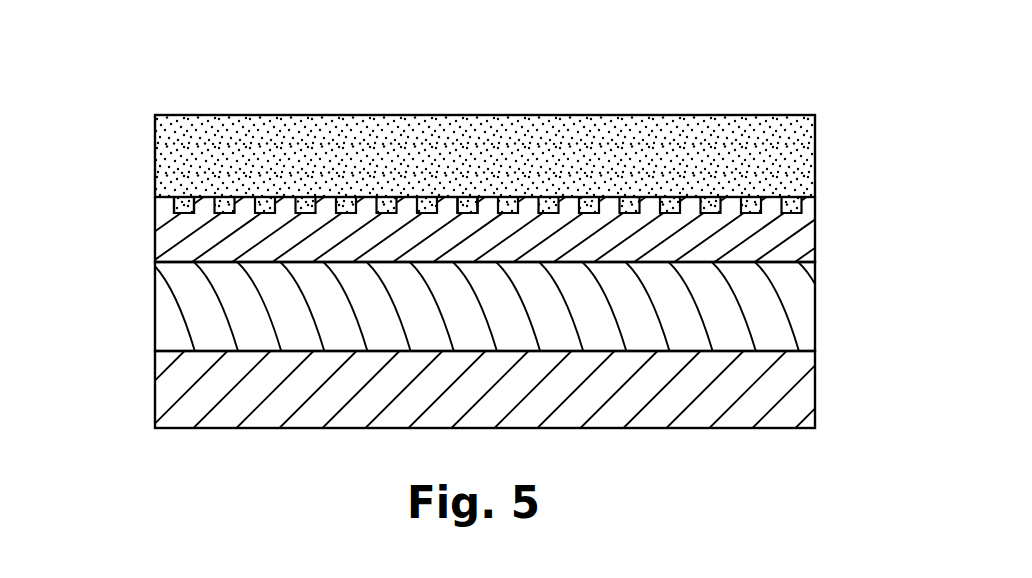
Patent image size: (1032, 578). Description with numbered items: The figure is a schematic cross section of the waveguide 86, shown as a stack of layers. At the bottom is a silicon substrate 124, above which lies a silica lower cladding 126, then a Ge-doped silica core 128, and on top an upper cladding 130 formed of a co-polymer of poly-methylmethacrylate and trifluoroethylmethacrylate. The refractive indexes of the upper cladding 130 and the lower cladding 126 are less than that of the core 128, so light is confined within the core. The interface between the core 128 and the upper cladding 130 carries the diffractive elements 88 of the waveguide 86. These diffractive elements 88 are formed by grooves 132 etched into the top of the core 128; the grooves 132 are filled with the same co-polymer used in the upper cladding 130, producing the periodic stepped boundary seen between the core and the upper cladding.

The waveguide 86 is at (482, 222).
The diffractive elements 88 is at (152, 199).
The silicon substrate 124 is at (817, 380).
The lower cladding 126 is at (817, 310).
The core 128 is at (817, 228).
The upper cladding 130 is at (817, 155).
The grooves 132 is at (183, 208).